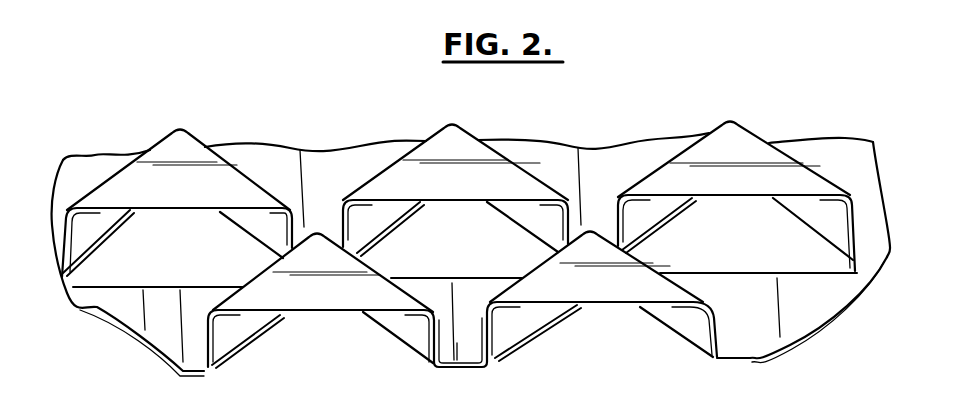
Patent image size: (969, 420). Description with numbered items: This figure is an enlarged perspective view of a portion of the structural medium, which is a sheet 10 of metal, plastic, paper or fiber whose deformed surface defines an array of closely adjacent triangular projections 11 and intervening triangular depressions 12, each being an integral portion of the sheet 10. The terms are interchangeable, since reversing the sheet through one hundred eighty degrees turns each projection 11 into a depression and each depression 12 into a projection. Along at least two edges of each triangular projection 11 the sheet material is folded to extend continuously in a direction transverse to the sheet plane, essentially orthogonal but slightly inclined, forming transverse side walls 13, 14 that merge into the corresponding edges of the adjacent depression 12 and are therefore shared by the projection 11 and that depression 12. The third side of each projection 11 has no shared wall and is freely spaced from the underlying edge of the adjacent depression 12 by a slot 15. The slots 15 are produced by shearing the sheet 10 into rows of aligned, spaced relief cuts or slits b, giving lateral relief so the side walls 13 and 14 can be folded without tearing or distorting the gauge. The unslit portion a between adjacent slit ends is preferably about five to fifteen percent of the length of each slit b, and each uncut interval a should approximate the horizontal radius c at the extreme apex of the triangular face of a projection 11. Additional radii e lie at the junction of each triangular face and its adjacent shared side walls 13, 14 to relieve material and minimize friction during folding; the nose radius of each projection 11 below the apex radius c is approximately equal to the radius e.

The sheet 10 is at (860, 135).
The projection 11 is at (196, 149).
The depression 12 is at (333, 166).
The transverse side wall 13 is at (257, 215).
The transverse side wall 14 is at (370, 217).
The slot 15 is at (182, 226).
The unslit portion a is at (488, 400).
The slit b is at (708, 399).
The horizontal radius c is at (473, 121).
The radius e is at (619, 189).